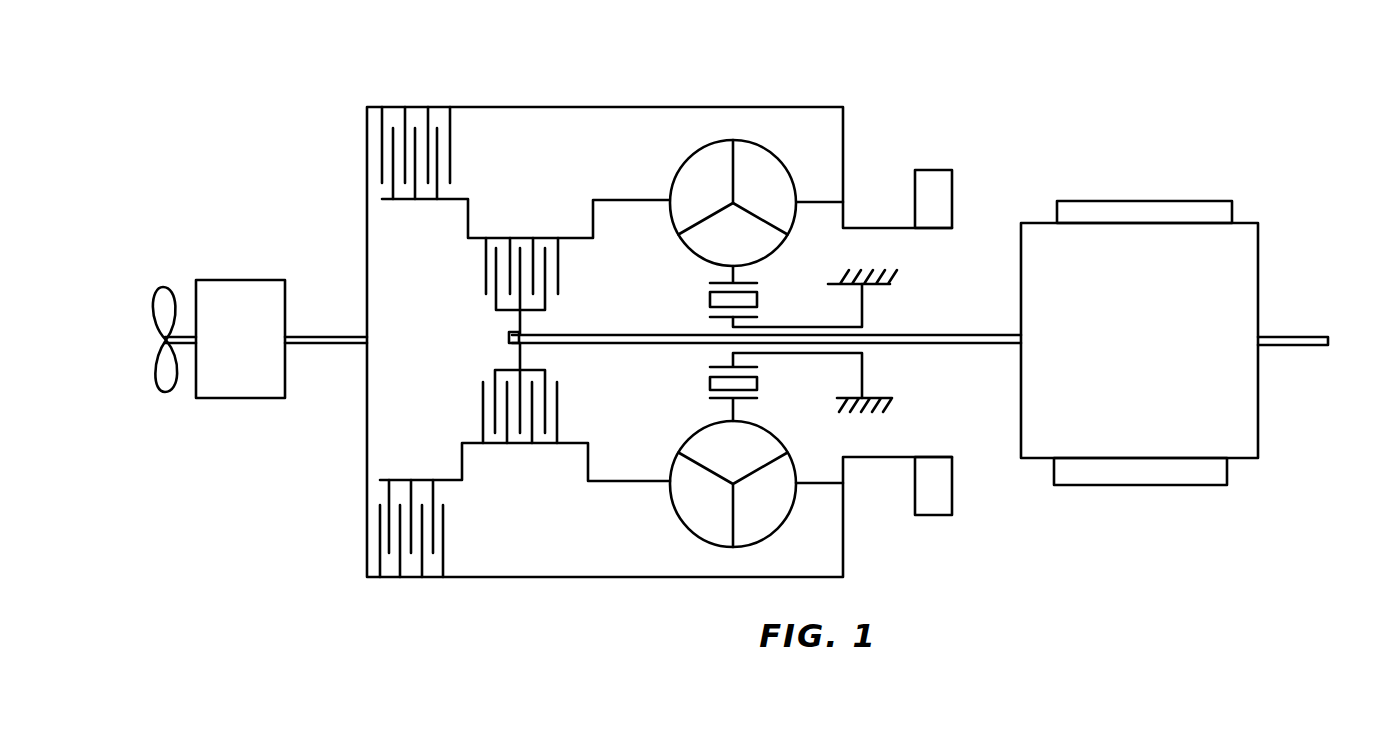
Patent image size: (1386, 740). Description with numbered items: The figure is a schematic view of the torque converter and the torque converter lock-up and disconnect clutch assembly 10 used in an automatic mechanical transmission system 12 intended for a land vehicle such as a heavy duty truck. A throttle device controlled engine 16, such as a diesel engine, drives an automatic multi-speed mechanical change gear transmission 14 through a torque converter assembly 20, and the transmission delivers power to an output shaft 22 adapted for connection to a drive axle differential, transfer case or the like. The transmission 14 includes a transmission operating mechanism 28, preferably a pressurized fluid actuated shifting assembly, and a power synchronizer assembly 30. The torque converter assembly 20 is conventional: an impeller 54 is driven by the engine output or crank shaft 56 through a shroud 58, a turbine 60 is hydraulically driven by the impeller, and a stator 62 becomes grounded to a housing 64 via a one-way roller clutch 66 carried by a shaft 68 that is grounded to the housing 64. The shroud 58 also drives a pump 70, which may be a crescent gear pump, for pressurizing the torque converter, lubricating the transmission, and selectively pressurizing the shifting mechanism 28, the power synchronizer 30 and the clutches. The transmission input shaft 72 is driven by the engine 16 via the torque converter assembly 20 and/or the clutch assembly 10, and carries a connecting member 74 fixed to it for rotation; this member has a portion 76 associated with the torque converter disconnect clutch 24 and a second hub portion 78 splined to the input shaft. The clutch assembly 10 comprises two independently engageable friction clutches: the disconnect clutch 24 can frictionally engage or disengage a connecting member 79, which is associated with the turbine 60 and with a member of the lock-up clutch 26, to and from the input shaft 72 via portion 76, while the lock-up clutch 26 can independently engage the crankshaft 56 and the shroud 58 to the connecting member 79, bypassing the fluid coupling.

The torque converter lock-up and disconnect clutch assembly 10 is at (456, 517).
The automatic mechanical transmission system 12 is at (1010, 124).
The automatic multi-speed mechanical change gear transmission 14 is at (1247, 290).
The engine 16 is at (252, 292).
The torque converter assembly 20 is at (733, 96).
The output shaft 22 is at (1318, 347).
The torque converter disconnect clutch 24 is at (543, 230).
The torque converter lock-up clutch 26 is at (453, 552).
The transmission operating mechanism 28 is at (1135, 208).
The power synchronizer assembly 30 is at (1140, 473).
The impeller 54 is at (770, 178).
The engine output or crank shaft 56 is at (325, 333).
The shroud 58 is at (590, 107).
The turbine 60 is at (683, 190).
The stator 62 is at (700, 245).
The housing 64 is at (893, 277).
The one-way roller clutch 66 is at (710, 382).
The shaft 68 is at (787, 355).
The pump 70 is at (942, 192).
The input shaft 72 is at (935, 347).
The connecting member 74 is at (496, 353).
The portion of connecting member 76 is at (537, 363).
The hub portion 78 is at (522, 322).
The connecting member 79 is at (493, 445).